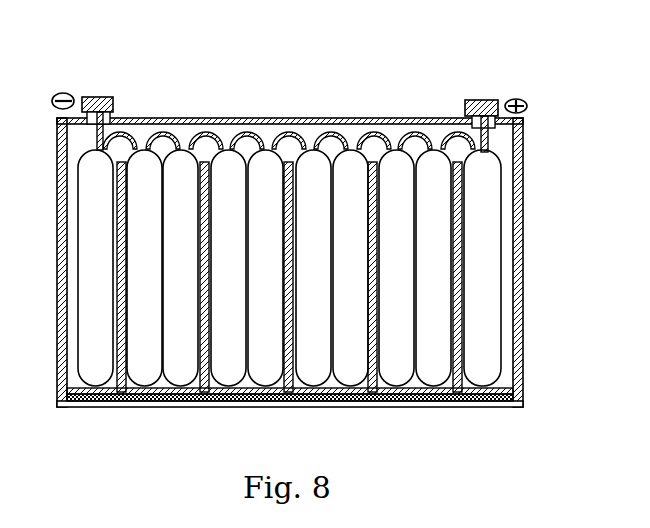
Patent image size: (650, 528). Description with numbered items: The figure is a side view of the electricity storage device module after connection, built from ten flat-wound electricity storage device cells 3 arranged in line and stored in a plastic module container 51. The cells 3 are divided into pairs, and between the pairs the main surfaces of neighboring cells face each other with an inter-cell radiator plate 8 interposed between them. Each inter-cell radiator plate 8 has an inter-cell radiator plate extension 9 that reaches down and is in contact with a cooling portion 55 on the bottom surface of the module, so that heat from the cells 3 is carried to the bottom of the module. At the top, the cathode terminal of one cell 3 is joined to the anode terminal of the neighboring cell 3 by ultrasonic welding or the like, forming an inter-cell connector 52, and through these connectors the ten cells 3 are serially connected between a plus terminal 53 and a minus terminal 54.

The flat-wound electricity storage device cell 3 is at (97, 262).
The inter-cell radiator plate 8 is at (117, 333).
The inter-cell radiator plate extension 9 is at (153, 396).
The module container 51 is at (231, 118).
The inter-cell connector 52 is at (122, 130).
The plus terminal 53 is at (478, 100).
The minus terminal 54 is at (95, 95).
The cooling portion 55 is at (226, 396).